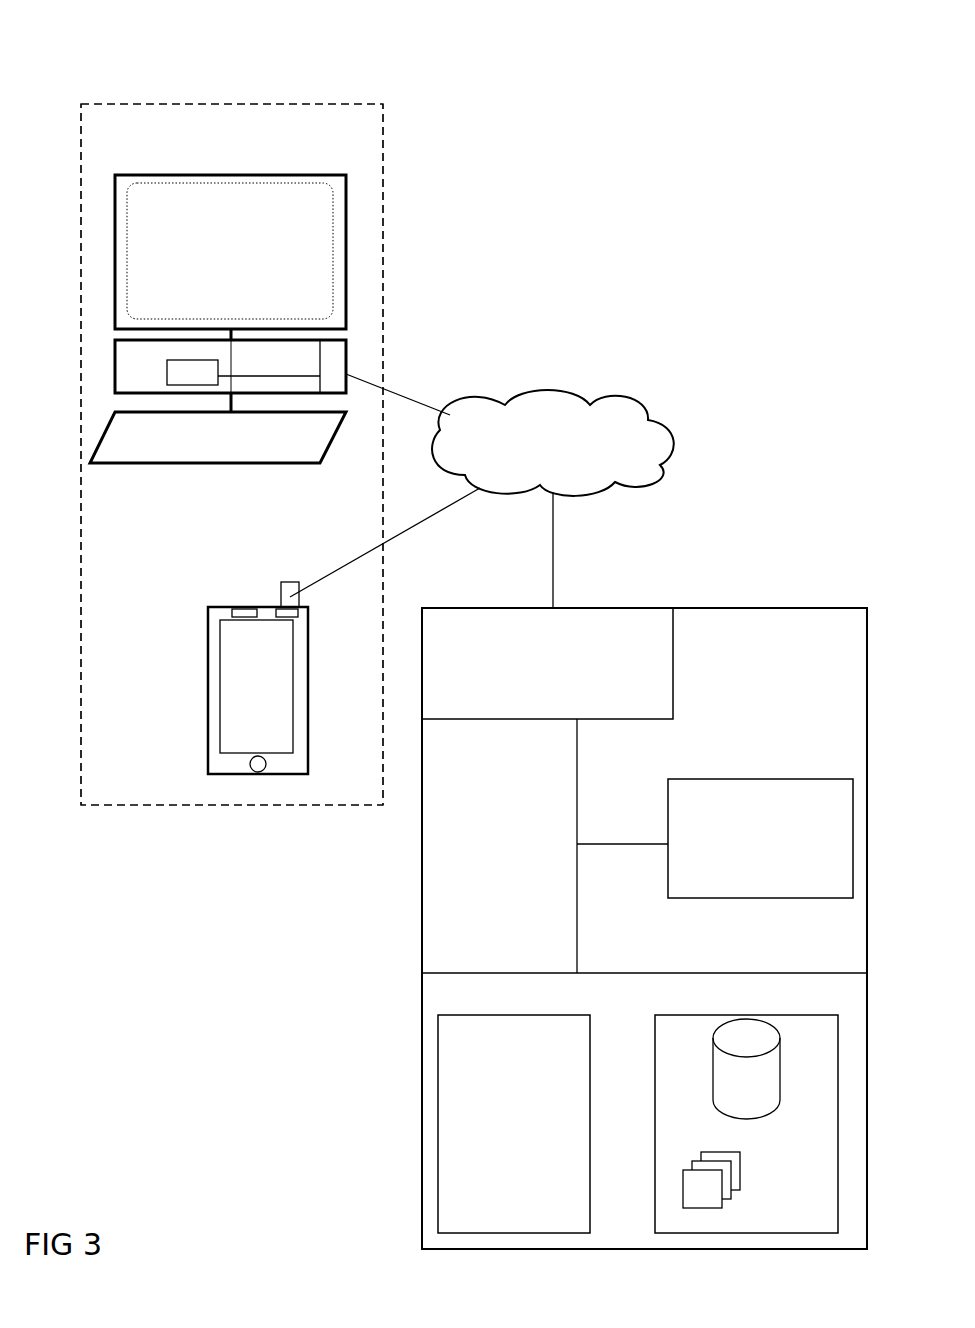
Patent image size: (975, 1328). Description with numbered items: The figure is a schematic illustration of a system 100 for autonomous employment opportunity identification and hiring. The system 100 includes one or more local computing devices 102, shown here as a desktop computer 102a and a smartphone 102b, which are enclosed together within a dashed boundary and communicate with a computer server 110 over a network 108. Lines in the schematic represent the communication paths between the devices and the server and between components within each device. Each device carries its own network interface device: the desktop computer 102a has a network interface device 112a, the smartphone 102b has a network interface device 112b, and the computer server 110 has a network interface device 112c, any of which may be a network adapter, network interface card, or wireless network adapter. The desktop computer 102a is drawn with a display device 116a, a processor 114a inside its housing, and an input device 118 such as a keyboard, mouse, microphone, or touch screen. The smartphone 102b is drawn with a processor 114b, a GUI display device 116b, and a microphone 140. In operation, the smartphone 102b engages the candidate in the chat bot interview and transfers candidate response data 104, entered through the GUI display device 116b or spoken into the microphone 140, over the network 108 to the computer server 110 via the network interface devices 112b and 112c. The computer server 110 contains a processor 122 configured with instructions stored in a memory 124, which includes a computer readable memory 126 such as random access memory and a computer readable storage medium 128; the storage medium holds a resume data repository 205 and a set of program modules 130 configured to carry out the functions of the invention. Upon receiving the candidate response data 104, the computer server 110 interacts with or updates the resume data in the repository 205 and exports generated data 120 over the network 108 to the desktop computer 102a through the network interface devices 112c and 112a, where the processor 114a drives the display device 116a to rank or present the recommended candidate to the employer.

The system 100 is at (216, 48).
The local computing devices 102 is at (302, 104).
The desktop computer 102a is at (246, 314).
The smartphone 102b is at (249, 664).
The candidate response data 104 is at (407, 530).
The network 108 is at (638, 410).
The computer server 110 is at (675, 905).
The network interface device of desktop computer 112a is at (348, 347).
The network interface device of smartphone 112b is at (300, 617).
The network interface device of computer server 112c is at (617, 608).
The processor of desktop computer 114a is at (168, 374).
The processor of smartphone 114b is at (232, 609).
The display device 116a is at (300, 175).
The GUI display device 116b is at (226, 727).
The input devices 118 is at (158, 463).
The generated data 120 is at (413, 402).
The processor 122 is at (757, 779).
The memory 124 is at (728, 973).
The computer readable memory 126 is at (503, 1015).
The computer readable storage medium 128 is at (747, 1015).
The program modules 130 is at (738, 1167).
The microphone 140 is at (265, 760).
The resume data repository 205 is at (780, 1068).